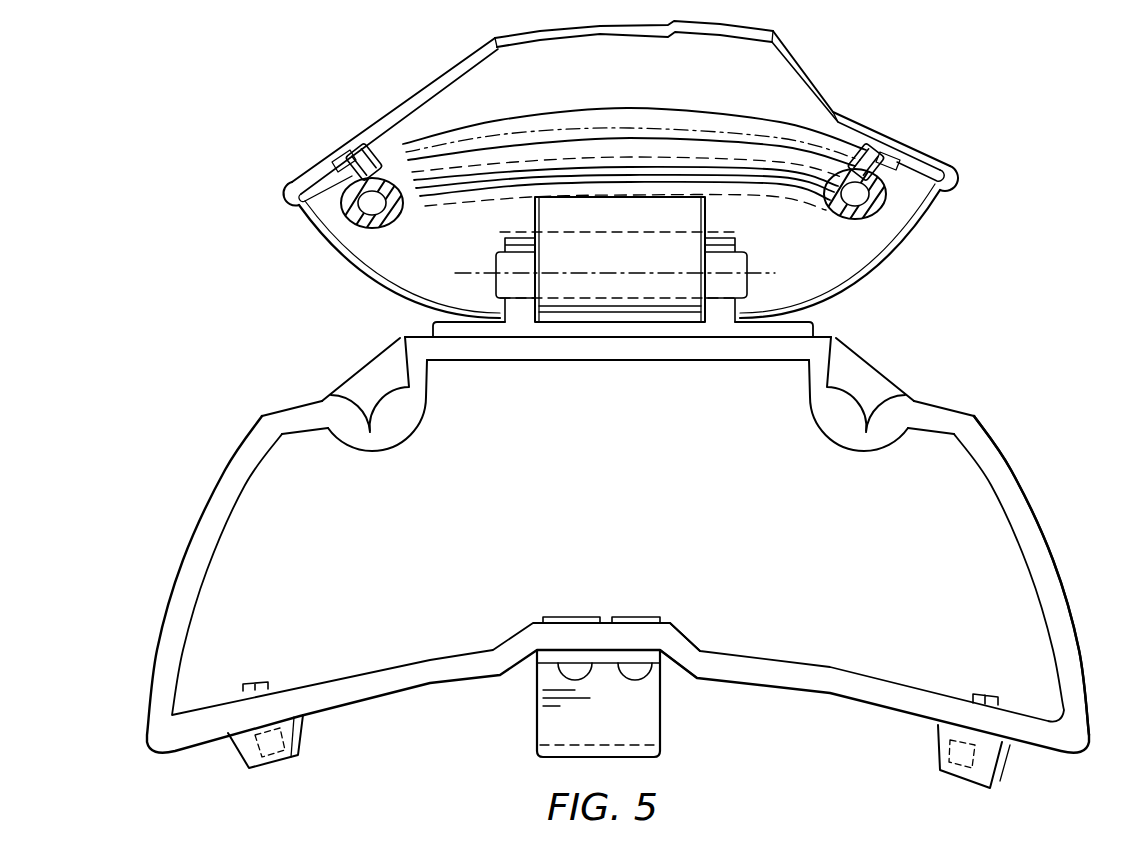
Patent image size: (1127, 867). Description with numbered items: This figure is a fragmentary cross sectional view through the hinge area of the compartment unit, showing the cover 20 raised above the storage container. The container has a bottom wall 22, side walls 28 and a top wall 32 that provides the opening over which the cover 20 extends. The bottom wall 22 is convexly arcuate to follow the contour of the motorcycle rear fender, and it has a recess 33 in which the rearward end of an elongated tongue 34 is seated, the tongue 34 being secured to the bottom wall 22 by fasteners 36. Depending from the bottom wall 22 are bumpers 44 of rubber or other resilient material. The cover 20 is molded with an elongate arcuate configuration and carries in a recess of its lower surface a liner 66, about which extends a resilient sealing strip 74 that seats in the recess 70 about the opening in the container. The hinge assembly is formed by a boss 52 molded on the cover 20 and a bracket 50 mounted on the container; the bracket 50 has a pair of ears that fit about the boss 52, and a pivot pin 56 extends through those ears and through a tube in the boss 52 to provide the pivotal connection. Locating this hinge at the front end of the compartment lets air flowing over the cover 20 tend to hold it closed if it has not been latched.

The cover 20 is at (627, 169).
The bottom wall 22 is at (436, 690).
The side walls 28 is at (1023, 508).
The top wall 32 is at (490, 362).
The recess 33 is at (668, 660).
The tongue 34 is at (647, 718).
The fasteners 36 is at (655, 620).
The bumpers 44 is at (1003, 756).
The hinge bracket 50 is at (815, 325).
The boss 52 is at (637, 305).
The pivot pin 56 is at (748, 260).
The liner 66 is at (363, 158).
The recess 70 is at (893, 372).
The sealing strip 74 is at (883, 207).